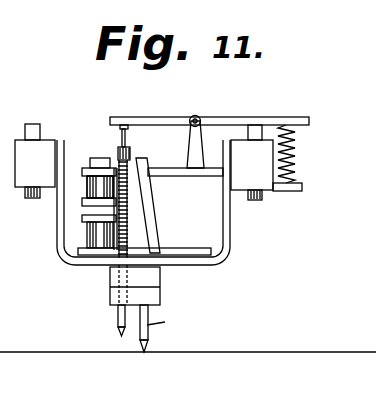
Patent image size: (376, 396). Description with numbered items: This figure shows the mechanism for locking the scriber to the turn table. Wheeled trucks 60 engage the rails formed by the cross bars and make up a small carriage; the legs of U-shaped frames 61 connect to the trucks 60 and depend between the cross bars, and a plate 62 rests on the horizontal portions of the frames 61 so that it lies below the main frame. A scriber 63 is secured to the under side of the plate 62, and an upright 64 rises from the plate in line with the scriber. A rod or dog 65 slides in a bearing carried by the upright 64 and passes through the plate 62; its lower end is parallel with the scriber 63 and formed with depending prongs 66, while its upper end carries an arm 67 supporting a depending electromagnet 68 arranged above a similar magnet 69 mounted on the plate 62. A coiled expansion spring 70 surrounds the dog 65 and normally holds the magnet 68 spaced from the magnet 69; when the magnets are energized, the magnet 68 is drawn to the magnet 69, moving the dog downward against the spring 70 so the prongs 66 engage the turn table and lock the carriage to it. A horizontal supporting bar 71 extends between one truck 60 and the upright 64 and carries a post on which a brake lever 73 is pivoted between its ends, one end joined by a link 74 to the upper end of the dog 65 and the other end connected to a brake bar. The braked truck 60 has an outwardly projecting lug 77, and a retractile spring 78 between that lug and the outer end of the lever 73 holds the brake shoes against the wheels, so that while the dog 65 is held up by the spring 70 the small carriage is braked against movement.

The wheeled trucks 60 is at (144, 162).
The U-shaped frames 61 is at (233, 250).
The plate 62 is at (183, 253).
The scriber 63 is at (152, 297).
The upright 64 is at (143, 220).
The rod or dog 65 is at (117, 315).
The depending prongs 66 is at (118, 336).
The arm 67 is at (103, 155).
The electromagnet 68 is at (100, 178).
The magnet 69 is at (100, 222).
The coiled expansion spring 70 is at (114, 252).
The horizontal supporting bar 71 is at (164, 168).
The brake lever 73 is at (217, 105).
The link 74 is at (124, 148).
The outwardly projecting lug 77 is at (292, 190).
The retractile spring 78 is at (292, 163).